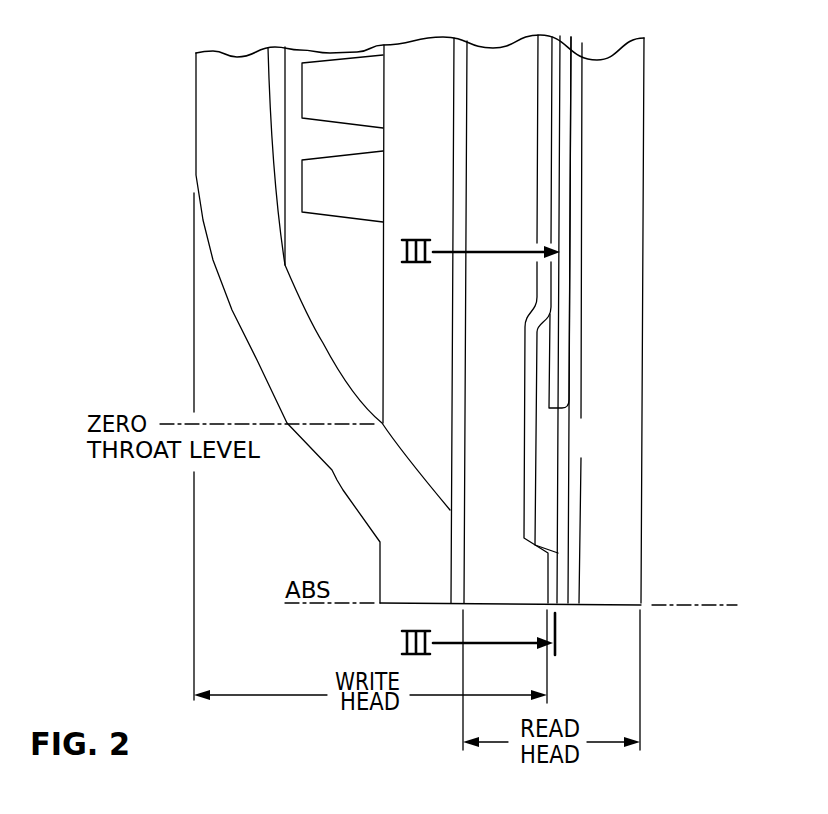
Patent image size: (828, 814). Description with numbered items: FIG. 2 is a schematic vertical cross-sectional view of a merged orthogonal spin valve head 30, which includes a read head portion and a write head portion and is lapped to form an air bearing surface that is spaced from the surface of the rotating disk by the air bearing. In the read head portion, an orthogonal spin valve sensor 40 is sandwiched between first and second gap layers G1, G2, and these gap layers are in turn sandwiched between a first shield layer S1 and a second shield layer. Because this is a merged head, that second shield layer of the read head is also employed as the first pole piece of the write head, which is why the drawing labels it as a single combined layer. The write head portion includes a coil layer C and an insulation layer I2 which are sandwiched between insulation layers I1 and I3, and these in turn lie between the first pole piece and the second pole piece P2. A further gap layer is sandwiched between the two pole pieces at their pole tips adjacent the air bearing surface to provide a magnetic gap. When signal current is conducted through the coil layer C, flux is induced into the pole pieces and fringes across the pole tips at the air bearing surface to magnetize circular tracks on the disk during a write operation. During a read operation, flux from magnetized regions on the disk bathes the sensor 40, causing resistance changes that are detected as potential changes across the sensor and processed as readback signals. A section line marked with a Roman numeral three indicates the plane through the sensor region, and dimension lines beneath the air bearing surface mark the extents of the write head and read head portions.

The head 30 is at (684, 52).
The orthogonal spin valve sensor 40 is at (572, 452).
The second pole piece P2 is at (323, 325).
The third insulation layer I3 is at (272, 117).
The insulation layer I2 is at (354, 234).
The first insulation layer I1 is at (432, 320).
The coil layer C is at (342, 138).
The second gap layer G2 is at (526, 509).
The first gap layer G1 is at (577, 510).
The first shield layer S1 is at (622, 320).